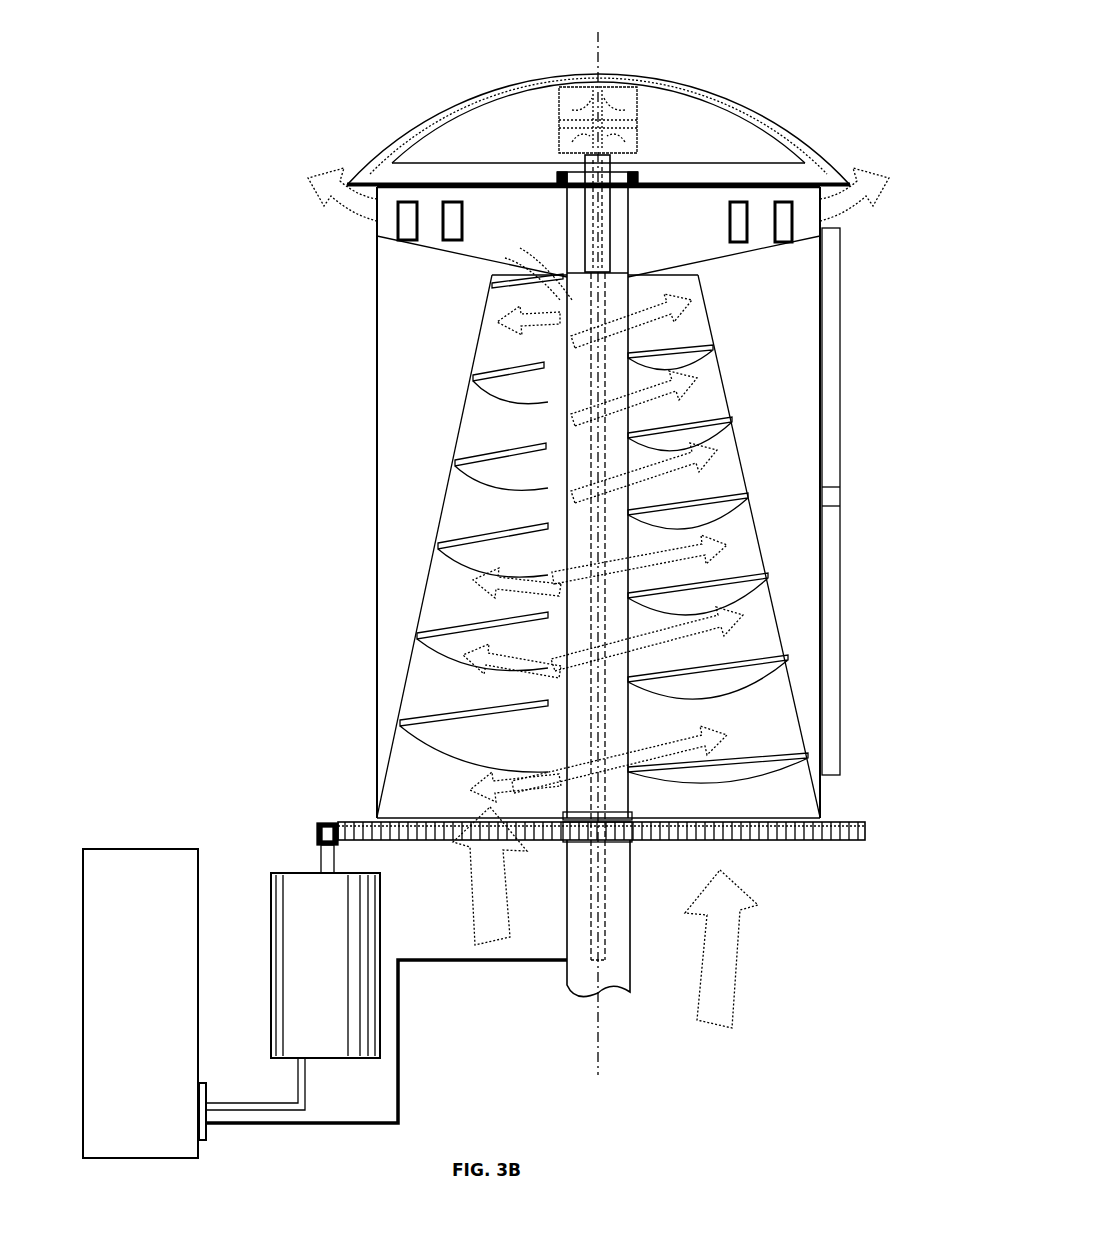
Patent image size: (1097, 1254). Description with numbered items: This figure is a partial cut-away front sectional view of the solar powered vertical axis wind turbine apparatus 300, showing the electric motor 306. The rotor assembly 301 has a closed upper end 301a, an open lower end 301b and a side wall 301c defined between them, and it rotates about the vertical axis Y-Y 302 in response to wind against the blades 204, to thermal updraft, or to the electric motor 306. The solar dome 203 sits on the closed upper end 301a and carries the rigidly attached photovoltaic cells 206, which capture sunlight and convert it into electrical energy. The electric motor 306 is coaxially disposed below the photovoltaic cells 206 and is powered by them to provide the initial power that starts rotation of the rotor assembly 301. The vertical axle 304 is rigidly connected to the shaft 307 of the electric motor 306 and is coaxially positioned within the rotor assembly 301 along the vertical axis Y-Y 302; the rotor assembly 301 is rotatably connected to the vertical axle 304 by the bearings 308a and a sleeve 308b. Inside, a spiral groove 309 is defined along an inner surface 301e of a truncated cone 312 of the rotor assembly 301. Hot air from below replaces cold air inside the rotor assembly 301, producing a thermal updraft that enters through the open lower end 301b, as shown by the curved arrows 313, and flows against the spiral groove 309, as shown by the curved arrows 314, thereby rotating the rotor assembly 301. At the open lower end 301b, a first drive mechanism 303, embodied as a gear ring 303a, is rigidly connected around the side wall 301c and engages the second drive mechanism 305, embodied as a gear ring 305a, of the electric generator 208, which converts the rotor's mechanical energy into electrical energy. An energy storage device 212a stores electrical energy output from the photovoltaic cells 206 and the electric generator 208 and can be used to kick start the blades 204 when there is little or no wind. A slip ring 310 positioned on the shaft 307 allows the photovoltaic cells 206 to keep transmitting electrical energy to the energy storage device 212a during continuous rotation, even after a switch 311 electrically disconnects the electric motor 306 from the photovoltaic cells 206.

The solar powered vertical axis wind turbine apparatus 300 is at (704, 58).
The solar dome 203 is at (498, 96).
The photovoltaic cells 206 is at (437, 128).
The rotor assembly 301 is at (375, 284).
The closed upper end 301a is at (517, 190).
The open lower end 301b is at (681, 846).
The side wall 301c is at (823, 800).
The inner surface 301e is at (470, 391).
The truncated cone 312 is at (722, 358).
The blades 204 is at (832, 456).
The bearings 308a is at (565, 181).
The sleeve 308b is at (565, 815).
The shaft 307 is at (606, 214).
The vertical axis Y-Y 302 is at (601, 227).
The slip ring 310 is at (557, 122).
The electric motor 306 is at (622, 97).
The spiral groove 309 is at (445, 645).
The curved arrows 314 is at (603, 525).
The first drive mechanism 303 is at (797, 845).
The gear ring 303a is at (435, 843).
The second drive mechanism 305 is at (315, 833).
The gear ring 305a is at (325, 823).
The electric generator 208 is at (352, 932).
The switch 311 is at (207, 1086).
The energy storage device 212a is at (174, 1151).
The vertical axle 304 is at (633, 944).
The curved arrows 313 is at (605, 917).